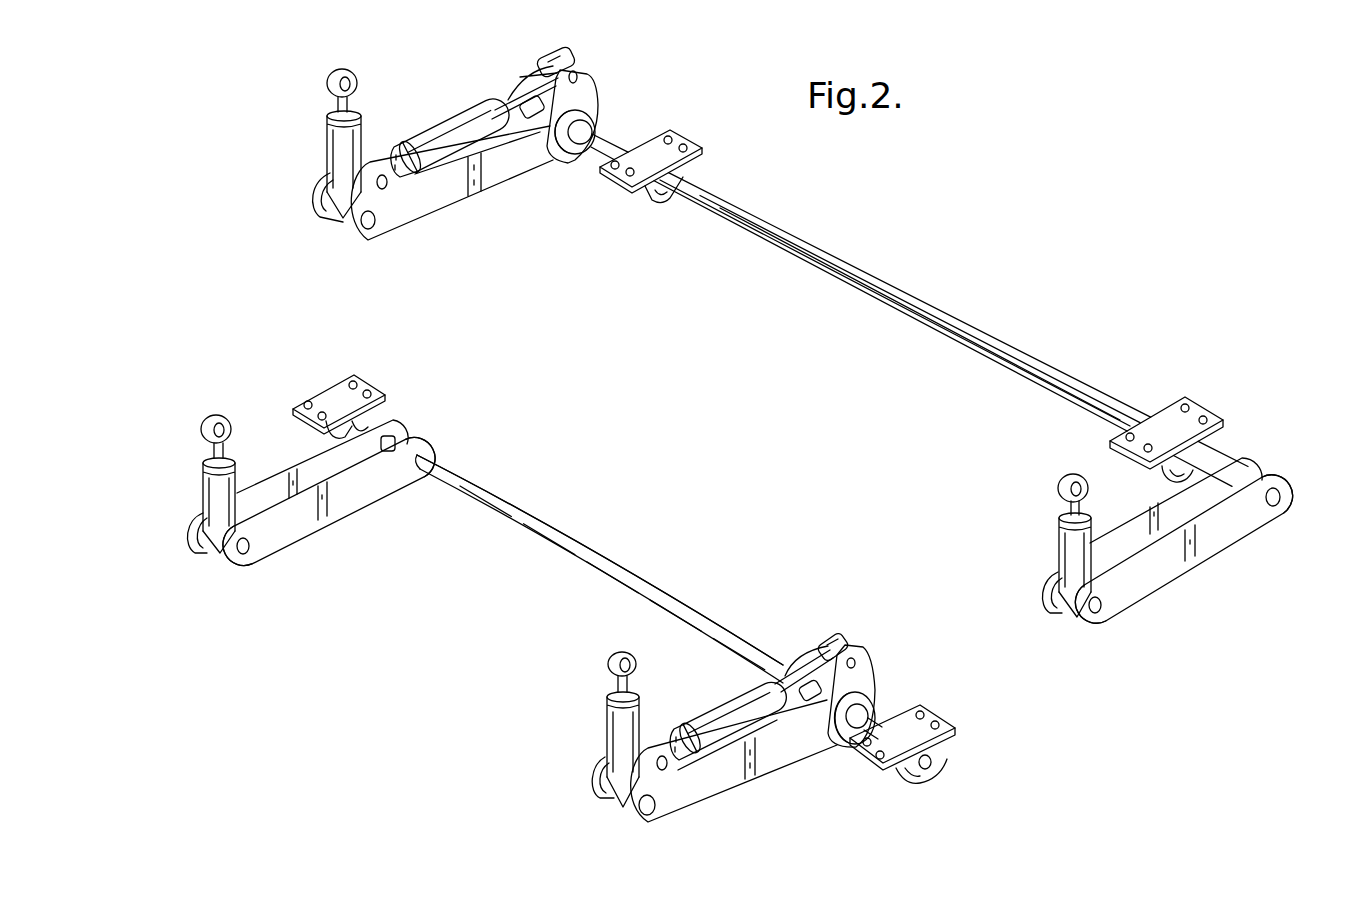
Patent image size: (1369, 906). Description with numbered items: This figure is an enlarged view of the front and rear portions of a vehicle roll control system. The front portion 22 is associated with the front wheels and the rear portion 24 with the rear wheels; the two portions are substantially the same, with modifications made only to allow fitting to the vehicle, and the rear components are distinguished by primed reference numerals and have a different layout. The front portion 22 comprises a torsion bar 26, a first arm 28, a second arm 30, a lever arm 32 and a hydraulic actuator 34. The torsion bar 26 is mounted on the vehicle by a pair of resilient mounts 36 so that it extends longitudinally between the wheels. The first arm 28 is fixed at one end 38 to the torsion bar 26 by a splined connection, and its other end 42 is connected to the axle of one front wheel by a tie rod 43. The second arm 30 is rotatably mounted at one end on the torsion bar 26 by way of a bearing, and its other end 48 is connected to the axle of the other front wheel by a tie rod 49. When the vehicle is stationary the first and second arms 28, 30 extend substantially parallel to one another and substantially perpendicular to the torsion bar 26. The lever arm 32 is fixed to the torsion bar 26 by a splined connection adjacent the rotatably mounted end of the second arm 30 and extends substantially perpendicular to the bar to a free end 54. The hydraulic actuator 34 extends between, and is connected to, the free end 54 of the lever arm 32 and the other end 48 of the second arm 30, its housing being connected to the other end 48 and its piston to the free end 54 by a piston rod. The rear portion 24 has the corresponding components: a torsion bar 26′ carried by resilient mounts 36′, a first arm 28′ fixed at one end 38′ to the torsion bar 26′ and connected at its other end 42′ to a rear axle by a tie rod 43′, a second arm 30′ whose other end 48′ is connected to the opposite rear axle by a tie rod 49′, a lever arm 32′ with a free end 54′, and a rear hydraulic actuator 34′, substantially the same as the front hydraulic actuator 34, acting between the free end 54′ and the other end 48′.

The portion of the vehicle roll control system 22 is at (598, 537).
The portion of the vehicle roll control system 24 is at (913, 283).
The torsion bar 26 is at (545, 545).
The torsion bar 26′ is at (907, 316).
The first arm 28 is at (345, 510).
The first arm 28′ is at (1238, 530).
The second arm 30 is at (775, 760).
The second arm 30′ is at (490, 182).
The lever arm 32 is at (870, 675).
The lever arm 32′ is at (588, 95).
The hydraulic actuator 34 is at (720, 715).
The rear hydraulic actuator 34′ is at (447, 130).
The resilient mounts 36 is at (365, 383).
The resilient mounts 36′ is at (683, 138).
The one end of the first arm 38 is at (437, 452).
The one end of the first arm 38′ is at (1287, 480).
The other end of the first arm 42 is at (236, 565).
The other end of the first arm 42′ is at (1105, 617).
The tie rod 43 is at (205, 485).
The tie rod 43′ is at (1058, 555).
The other end of the second arm 48 is at (632, 806).
The other end of the second arm 48′ is at (365, 242).
The tie rod 49 is at (607, 727).
The tie rod 49′ is at (338, 148).
The free end of the lever arm 54 is at (846, 640).
The free end of the lever arm 54′ is at (580, 65).